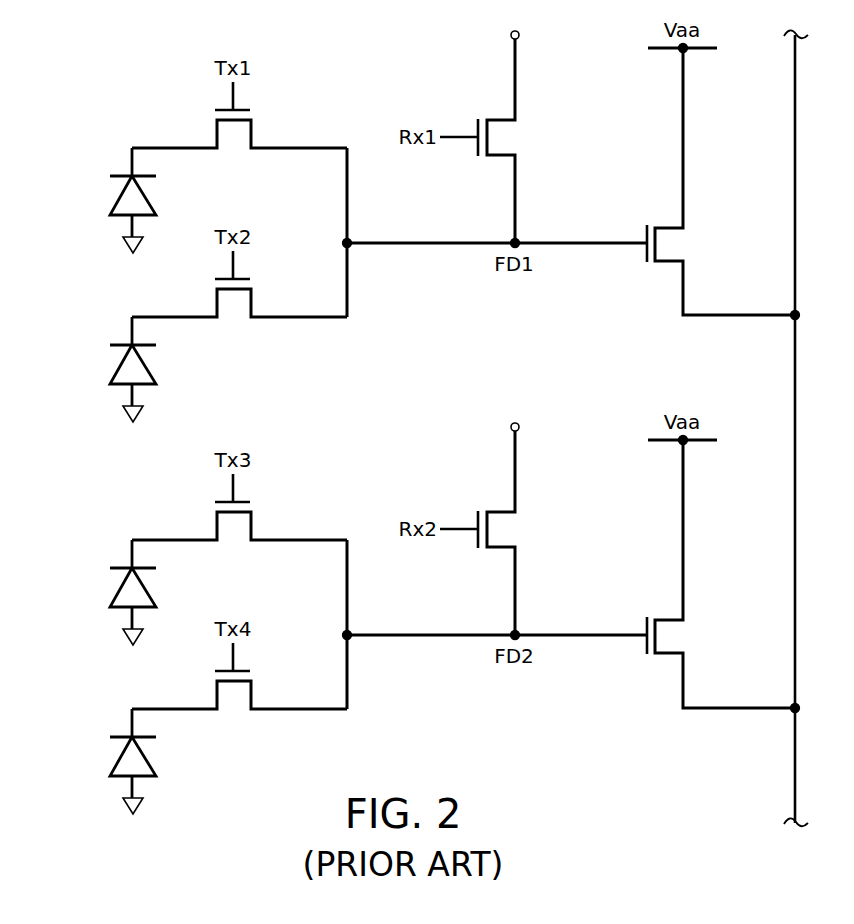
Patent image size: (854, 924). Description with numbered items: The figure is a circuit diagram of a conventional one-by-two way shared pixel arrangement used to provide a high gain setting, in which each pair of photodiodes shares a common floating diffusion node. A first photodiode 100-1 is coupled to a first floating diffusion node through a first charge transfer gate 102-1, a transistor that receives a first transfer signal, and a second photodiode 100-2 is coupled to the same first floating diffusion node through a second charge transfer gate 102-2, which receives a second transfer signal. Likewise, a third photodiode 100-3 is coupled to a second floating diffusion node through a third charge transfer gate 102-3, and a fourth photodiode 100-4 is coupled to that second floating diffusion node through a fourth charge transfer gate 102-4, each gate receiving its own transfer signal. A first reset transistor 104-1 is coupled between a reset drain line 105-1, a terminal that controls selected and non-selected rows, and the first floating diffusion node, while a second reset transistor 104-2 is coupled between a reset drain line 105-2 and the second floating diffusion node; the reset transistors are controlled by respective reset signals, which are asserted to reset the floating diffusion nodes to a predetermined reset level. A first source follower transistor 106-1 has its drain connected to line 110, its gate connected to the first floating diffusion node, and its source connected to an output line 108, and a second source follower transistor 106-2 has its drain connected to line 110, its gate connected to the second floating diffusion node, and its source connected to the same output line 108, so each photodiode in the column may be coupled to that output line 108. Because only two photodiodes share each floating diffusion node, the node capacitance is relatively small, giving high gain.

The first photodiode 100-1 is at (131, 201).
The second photodiode 100-2 is at (131, 370).
The third photodiode 100-3 is at (131, 593).
The fourth photodiode 100-4 is at (131, 762).
The first charge transfer gate 102-1 is at (232, 146).
The second charge transfer gate 102-2 is at (232, 315).
The third charge transfer gate 102-3 is at (232, 538).
The fourth charge transfer gate 102-4 is at (232, 707).
The first reset transistor 104-1 is at (497, 152).
The second reset transistor 104-2 is at (497, 544).
The reset drain line 105-1 is at (510, 36).
The reset drain line 105-2 is at (510, 428).
The first source follower transistor 106-1 is at (667, 256).
The second source follower transistor 106-2 is at (667, 648).
The output line 108 is at (795, 160).
The line 110 is at (697, 50).